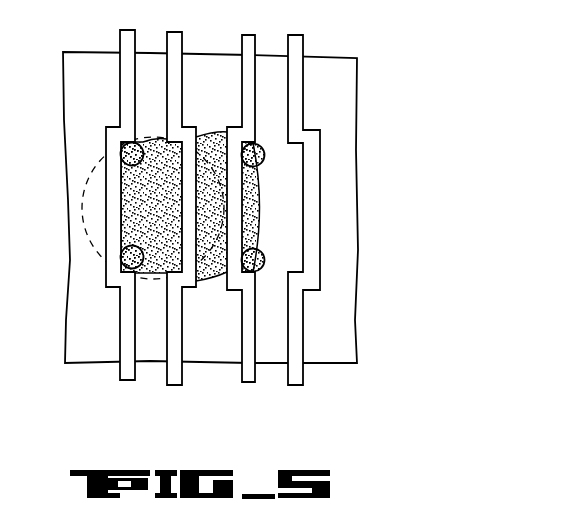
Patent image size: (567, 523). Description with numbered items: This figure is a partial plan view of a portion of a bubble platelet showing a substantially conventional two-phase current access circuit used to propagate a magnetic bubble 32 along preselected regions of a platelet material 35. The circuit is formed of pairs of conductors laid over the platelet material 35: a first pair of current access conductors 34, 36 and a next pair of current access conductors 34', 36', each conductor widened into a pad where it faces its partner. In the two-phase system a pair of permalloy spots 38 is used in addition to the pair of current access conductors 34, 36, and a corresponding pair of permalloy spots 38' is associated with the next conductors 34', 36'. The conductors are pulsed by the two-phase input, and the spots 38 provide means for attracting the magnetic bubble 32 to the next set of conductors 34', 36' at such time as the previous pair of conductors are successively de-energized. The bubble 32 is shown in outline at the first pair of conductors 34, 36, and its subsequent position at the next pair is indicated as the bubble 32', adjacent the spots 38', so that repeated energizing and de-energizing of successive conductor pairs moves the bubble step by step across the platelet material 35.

The bubble 32 is at (146, 205).
The bubble 32' is at (213, 178).
The current access conductor 34 is at (124, 231).
The current access conductor 36 is at (179, 232).
The current access conductor 34' is at (249, 234).
The current access conductor 36' is at (304, 234).
The platelet material 35 is at (347, 97).
The permalloy spots 38 is at (86, 206).
The permalloy spots 38' is at (275, 207).